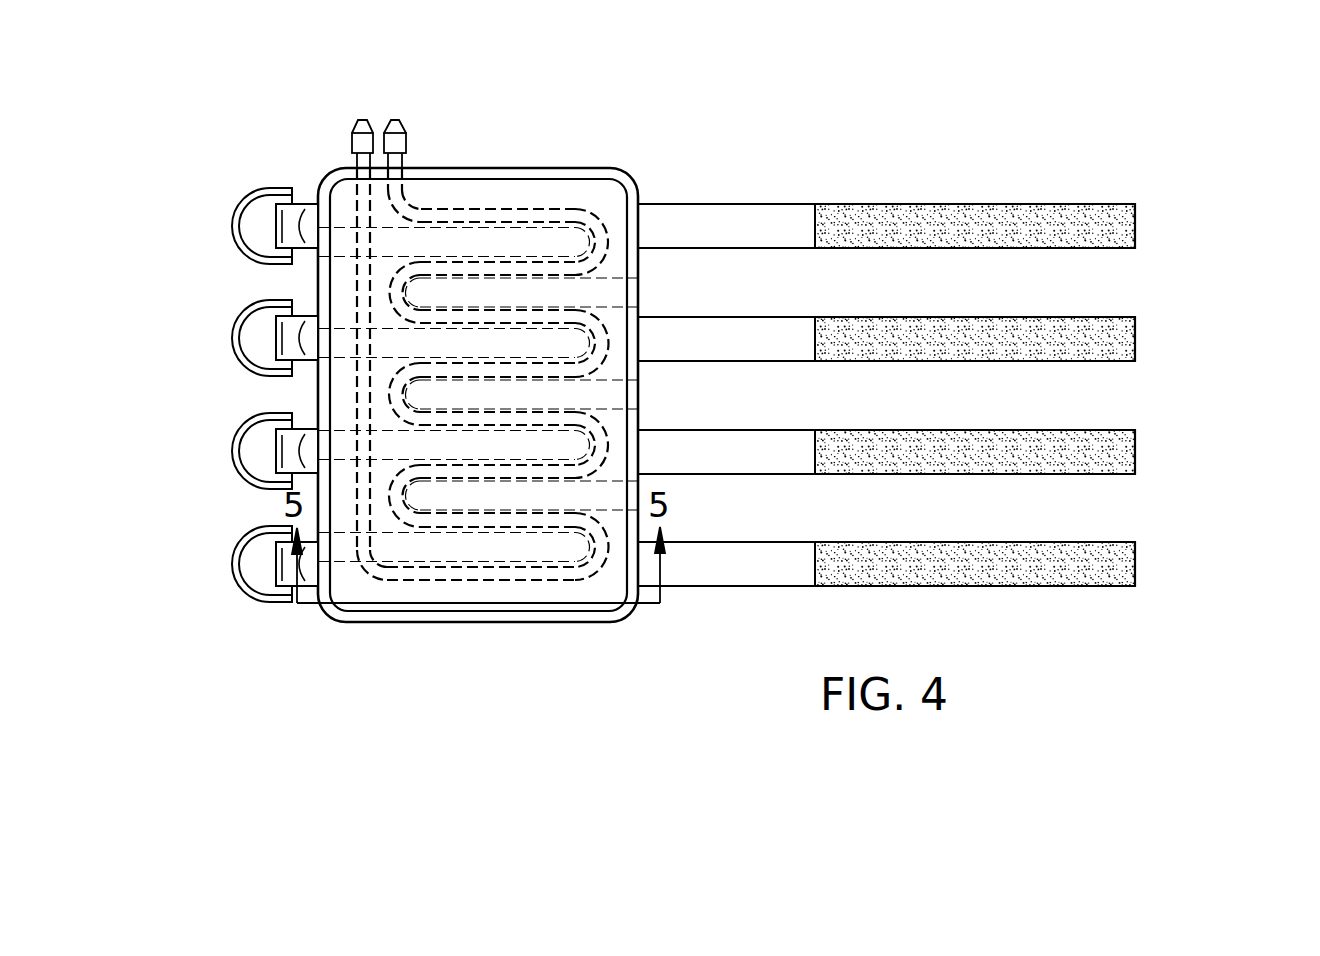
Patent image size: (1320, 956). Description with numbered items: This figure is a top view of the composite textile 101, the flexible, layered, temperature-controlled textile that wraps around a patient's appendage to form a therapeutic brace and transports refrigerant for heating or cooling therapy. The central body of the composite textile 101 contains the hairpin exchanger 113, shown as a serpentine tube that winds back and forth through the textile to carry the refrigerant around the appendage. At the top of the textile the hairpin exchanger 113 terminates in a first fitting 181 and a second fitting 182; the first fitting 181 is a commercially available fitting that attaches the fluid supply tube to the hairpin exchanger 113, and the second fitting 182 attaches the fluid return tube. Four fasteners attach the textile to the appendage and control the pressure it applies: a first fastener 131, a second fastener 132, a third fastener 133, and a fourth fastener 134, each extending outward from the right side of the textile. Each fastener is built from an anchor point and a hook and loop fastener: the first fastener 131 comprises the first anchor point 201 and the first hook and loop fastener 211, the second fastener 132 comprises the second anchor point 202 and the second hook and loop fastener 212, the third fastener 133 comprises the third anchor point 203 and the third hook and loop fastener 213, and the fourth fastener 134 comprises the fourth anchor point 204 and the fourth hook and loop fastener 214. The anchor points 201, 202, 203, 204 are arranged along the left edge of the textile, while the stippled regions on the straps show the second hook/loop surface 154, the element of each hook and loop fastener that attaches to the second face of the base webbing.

The composite textile 101 is at (607, 168).
The hairpin exchanger 113 is at (507, 218).
The first fitting 181 is at (364, 120).
The second fitting 182 is at (398, 120).
The first anchor point 201 is at (258, 191).
The second anchor point 202 is at (236, 334).
The third anchor point 203 is at (237, 444).
The fourth anchor point 204 is at (238, 556).
The first fastener 131 is at (1137, 227).
The second fastener 132 is at (1137, 340).
The third fastener 133 is at (1137, 450).
The fourth fastener 134 is at (1137, 567).
The first hook and loop fastener 211 is at (917, 204).
The second hook and loop fastener 212 is at (878, 317).
The third hook and loop fastener 213 is at (860, 430).
The fourth hook and loop fastener 214 is at (868, 542).
The second hook/loop surface 154 is at (1060, 228).